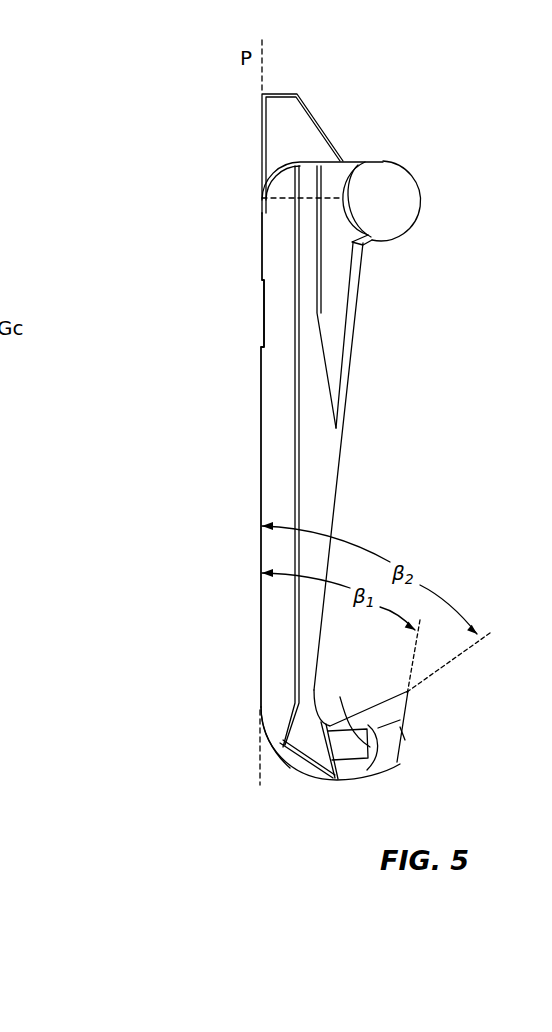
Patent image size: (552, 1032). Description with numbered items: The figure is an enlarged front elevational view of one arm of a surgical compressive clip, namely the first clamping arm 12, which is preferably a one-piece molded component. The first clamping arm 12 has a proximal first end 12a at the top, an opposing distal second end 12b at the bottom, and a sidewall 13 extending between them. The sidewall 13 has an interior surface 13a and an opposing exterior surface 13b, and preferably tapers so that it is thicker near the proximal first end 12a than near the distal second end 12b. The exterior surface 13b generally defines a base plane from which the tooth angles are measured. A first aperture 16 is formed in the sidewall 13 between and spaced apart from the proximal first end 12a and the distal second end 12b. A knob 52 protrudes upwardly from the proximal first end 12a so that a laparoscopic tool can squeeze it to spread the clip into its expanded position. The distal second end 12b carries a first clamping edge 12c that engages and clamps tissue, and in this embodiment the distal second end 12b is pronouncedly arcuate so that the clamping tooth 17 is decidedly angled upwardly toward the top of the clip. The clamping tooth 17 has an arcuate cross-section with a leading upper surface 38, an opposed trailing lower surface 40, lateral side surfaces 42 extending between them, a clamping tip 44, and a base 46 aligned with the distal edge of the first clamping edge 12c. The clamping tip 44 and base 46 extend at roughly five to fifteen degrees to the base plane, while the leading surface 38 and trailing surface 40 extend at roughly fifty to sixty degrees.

The first clamping arm 12 is at (444, 92).
The proximal first end 12a is at (352, 161).
The distal second end 12b is at (253, 743).
The first clamping edge 12c is at (305, 750).
The sidewall 13 is at (262, 460).
The interior surface 13a is at (340, 508).
The exterior surface 13b is at (262, 490).
The first aperture 16 is at (250, 313).
The clamping tooth 17 is at (412, 728).
The first or upper surface 38 is at (379, 728).
The second or lower surface 40 is at (388, 767).
The lateral side surfaces 42 is at (382, 730).
The clamping tip 44 is at (400, 727).
The base 46 is at (370, 747).
The knob 52 is at (280, 126).